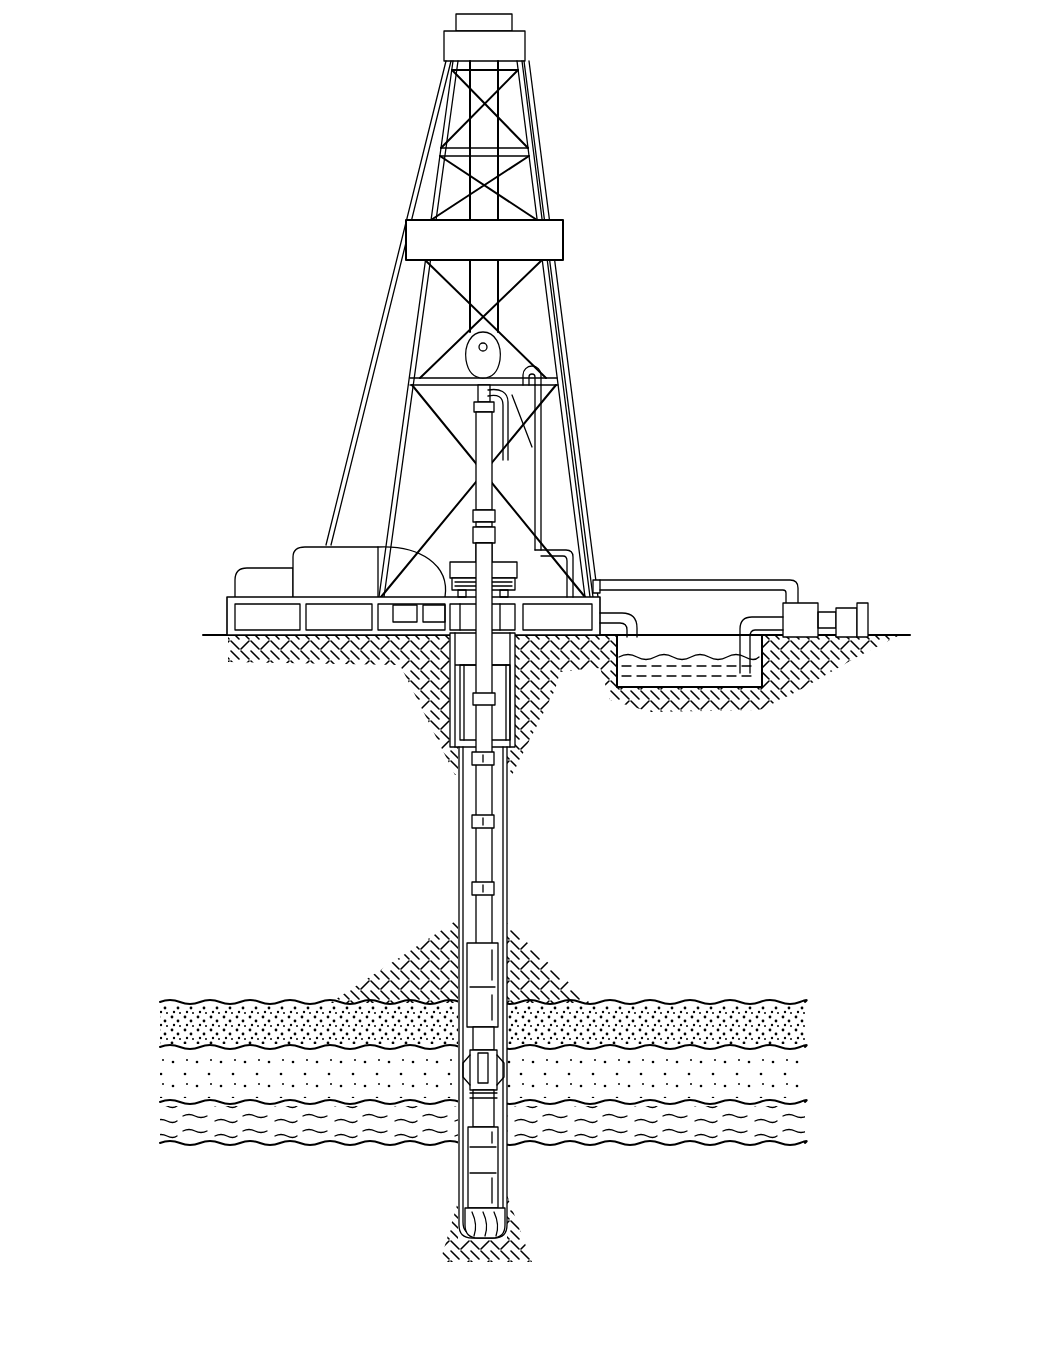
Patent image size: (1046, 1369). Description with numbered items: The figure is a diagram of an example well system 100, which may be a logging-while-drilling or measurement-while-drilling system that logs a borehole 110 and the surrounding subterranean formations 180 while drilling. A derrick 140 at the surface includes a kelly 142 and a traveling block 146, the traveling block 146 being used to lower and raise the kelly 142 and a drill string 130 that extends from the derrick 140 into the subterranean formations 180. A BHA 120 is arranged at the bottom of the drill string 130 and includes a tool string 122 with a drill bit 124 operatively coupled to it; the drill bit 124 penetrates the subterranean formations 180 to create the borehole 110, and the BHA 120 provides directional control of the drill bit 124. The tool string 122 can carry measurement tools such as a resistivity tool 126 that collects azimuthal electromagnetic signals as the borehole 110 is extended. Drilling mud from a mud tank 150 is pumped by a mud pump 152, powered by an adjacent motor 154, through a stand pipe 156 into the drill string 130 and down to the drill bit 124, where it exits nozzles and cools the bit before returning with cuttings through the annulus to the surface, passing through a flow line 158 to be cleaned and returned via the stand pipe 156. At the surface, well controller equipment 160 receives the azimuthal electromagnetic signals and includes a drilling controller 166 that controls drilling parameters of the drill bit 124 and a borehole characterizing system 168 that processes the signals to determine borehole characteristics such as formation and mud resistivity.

The well system 100 is at (262, 118).
The borehole 110 is at (507, 895).
The BHA 120 is at (445, 1046).
The tool string 122 is at (440, 1028).
The drill bit 124 is at (465, 1218).
The resistivity tool 126 is at (470, 1182).
The drill string 130 is at (493, 858).
The derrick 140 is at (568, 408).
The kelly 142 is at (475, 423).
The traveling block 146 is at (500, 360).
The mud tank 150 is at (690, 667).
The mud pump 152 is at (814, 601).
The motor 154 is at (864, 601).
The stand pipe 156 is at (545, 498).
The flow line 158 is at (618, 612).
The well controller equipment 160 is at (338, 678).
The drilling controller 166 is at (403, 640).
The borehole characterizing system 168 is at (443, 597).
The subterranean formations 180 is at (331, 866).